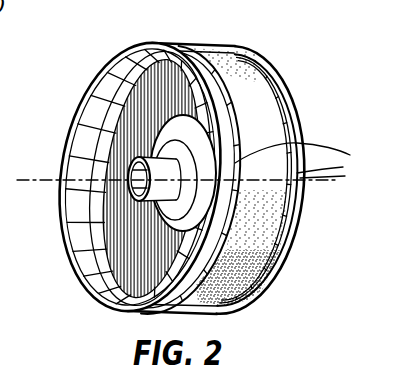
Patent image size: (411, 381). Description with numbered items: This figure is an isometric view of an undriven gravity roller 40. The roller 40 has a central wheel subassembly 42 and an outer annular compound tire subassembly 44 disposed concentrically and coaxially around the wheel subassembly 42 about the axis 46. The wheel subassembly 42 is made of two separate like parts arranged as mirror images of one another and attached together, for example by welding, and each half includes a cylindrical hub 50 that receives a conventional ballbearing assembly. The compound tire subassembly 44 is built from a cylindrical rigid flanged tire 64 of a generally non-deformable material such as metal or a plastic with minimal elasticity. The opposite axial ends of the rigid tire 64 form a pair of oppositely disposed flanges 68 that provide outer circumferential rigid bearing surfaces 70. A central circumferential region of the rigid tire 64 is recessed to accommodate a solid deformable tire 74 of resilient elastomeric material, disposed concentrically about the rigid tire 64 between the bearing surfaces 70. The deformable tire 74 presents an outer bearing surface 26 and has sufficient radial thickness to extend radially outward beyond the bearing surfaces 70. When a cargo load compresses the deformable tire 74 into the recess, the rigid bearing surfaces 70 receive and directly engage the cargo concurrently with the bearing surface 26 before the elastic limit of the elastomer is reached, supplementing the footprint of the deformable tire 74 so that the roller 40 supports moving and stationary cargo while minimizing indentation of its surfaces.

The deformable tire bearing surface 26 is at (231, 317).
The roller 40 is at (312, 125).
The central wheel subassembly 42 is at (140, 111).
The compound tire subassembly 44 is at (280, 167).
The axis 46 is at (334, 186).
The cylindrical hub 50 is at (147, 213).
The rigid flanged tire 64 is at (82, 157).
The flanges 68 is at (63, 181).
The outer circumferential rigid bearing surfaces 70 is at (272, 82).
The deformable tire 74 is at (254, 297).